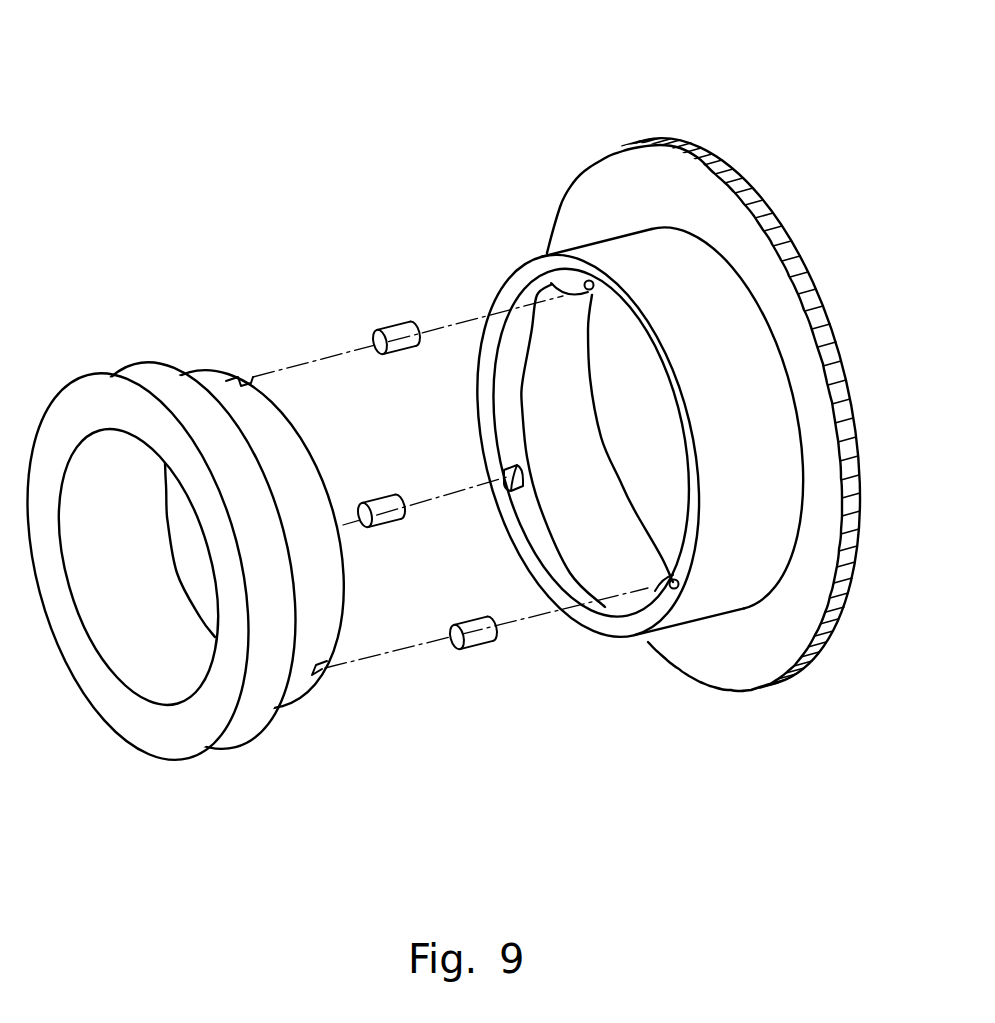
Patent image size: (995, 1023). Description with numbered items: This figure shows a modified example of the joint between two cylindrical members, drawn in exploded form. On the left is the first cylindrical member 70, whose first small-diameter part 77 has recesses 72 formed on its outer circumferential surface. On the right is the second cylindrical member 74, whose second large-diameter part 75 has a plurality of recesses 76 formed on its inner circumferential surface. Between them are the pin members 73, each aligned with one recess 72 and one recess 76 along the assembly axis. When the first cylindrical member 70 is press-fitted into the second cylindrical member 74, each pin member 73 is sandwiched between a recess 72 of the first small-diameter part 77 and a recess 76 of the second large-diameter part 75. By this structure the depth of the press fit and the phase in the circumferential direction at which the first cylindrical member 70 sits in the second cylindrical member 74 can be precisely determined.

The first cylindrical member 70 is at (116, 308).
The recess 72 is at (247, 376).
The pin member 73 is at (390, 330).
The second cylindrical member 74 is at (591, 91).
The second large-diameter part 75 is at (503, 402).
The recess 76 is at (553, 287).
The first small-diameter part 77 is at (303, 451).